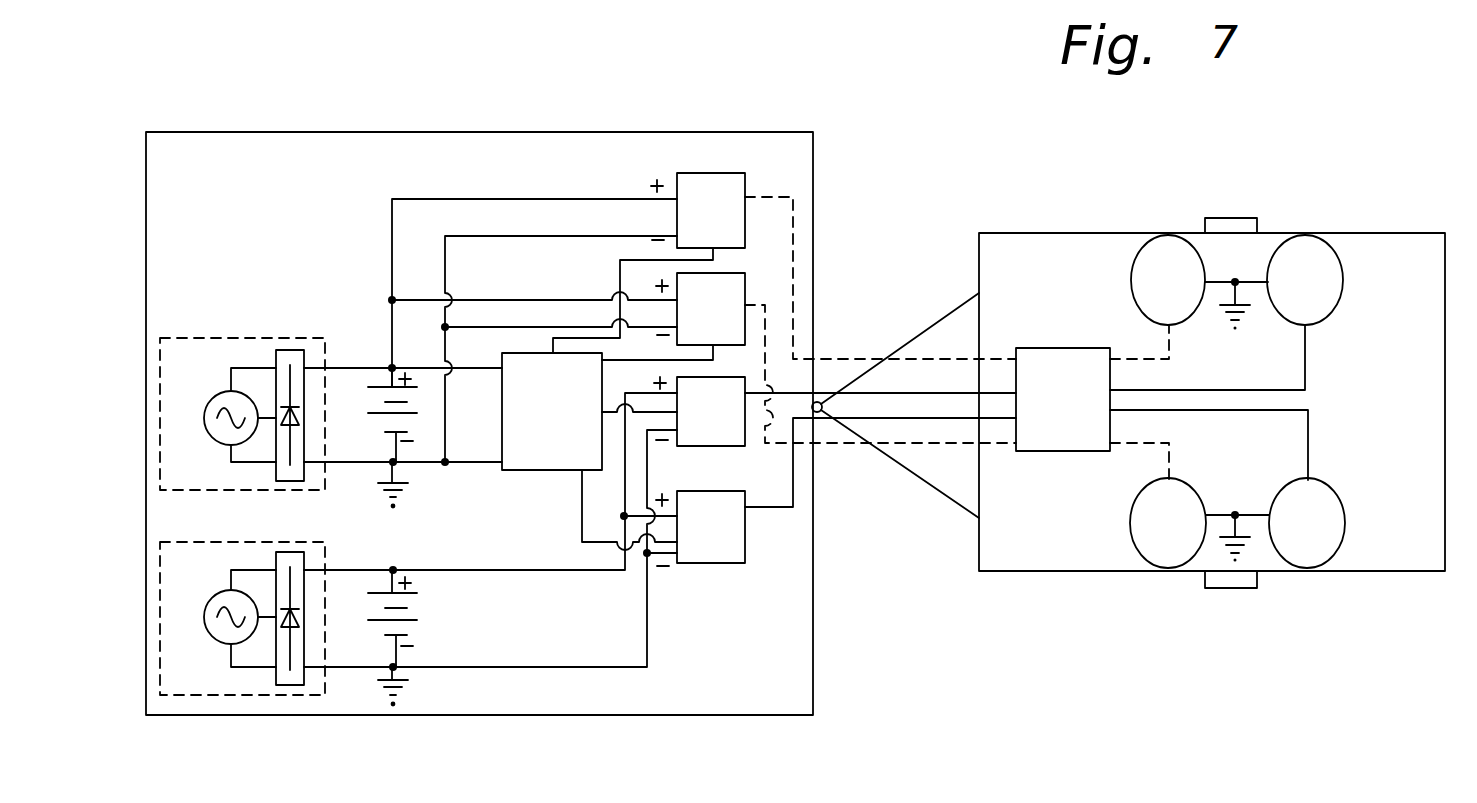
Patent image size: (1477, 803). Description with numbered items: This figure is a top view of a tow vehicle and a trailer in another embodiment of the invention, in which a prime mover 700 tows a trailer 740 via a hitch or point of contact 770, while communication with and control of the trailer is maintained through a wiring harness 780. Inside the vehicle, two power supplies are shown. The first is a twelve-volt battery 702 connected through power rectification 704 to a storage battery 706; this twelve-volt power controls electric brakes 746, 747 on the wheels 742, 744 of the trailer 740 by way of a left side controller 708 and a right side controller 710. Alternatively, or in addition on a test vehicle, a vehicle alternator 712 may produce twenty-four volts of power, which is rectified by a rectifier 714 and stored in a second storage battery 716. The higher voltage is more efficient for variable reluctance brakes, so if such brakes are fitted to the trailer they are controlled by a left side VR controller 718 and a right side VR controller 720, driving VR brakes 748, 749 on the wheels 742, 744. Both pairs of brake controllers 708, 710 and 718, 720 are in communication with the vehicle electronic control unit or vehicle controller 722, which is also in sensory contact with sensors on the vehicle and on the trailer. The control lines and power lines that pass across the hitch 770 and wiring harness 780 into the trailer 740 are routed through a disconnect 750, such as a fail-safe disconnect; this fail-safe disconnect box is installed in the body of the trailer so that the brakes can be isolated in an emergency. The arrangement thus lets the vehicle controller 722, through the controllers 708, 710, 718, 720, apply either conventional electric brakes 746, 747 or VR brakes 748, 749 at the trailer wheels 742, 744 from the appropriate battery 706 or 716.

The prime mover 700 is at (660, 132).
The 12V battery 702 is at (207, 338).
The power rectification 704 is at (294, 350).
The storage battery 706 is at (412, 423).
The left side controller 708 is at (745, 258).
The right side controller 710 is at (718, 173).
The vehicle alternator 712 is at (240, 542).
The rectifier 714 is at (294, 552).
The storage battery 716 is at (418, 606).
The left side VR controller 718 is at (726, 563).
The right side VR controller 720 is at (710, 446).
The vehicle electronic control unit 722 is at (545, 470).
The trailer 740 is at (1012, 233).
The wheel 742 is at (1257, 222).
The wheel 744 is at (1252, 588).
The electric brake 746 is at (1131, 268).
The electric brake 747 is at (1130, 523).
The VR brake 748 is at (1340, 305).
The VR brake 749 is at (1338, 495).
The disconnect 750 is at (1073, 348).
The hitch 770 is at (850, 359).
The wiring harness 780 is at (848, 443).